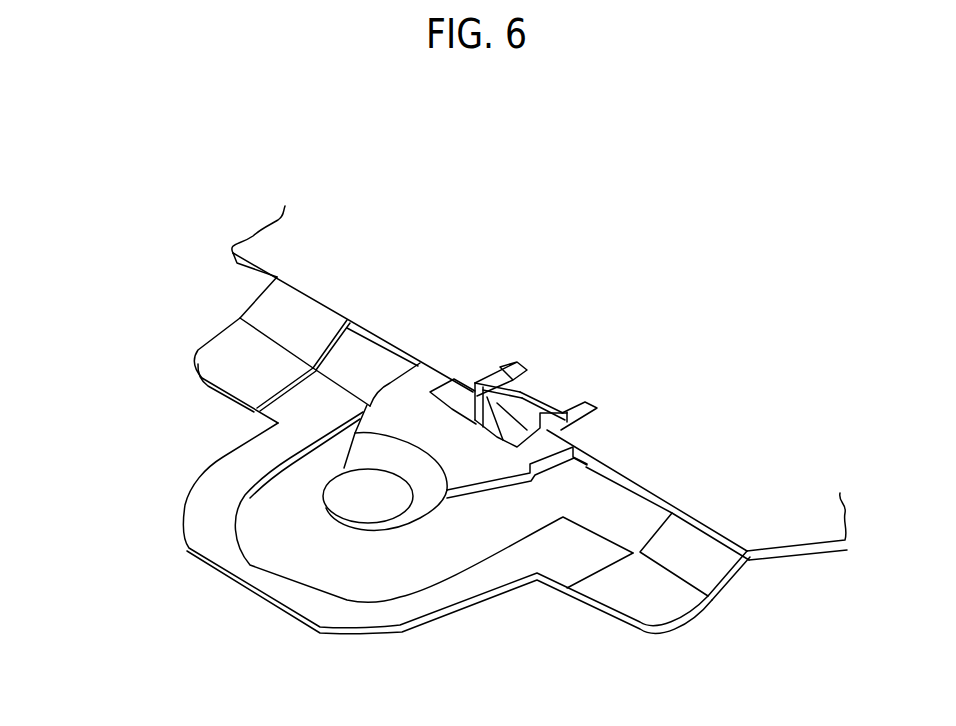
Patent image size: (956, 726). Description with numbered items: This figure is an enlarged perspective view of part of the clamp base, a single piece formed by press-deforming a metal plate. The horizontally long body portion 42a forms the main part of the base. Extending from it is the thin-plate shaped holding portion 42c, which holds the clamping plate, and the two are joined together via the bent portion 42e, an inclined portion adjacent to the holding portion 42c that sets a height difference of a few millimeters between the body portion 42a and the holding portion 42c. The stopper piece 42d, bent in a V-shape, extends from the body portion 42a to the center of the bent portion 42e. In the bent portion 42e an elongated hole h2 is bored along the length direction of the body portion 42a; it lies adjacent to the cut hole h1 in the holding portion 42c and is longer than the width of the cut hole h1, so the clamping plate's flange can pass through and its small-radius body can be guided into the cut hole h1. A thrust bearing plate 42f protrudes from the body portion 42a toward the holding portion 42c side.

The body portion 42a is at (283, 230).
The bent portion 42e is at (265, 310).
The elongated hole h2 is at (352, 360).
The stopper piece 42d is at (533, 397).
The cut hole h1 is at (268, 508).
The holding portion 42c is at (207, 533).
The thrust bearing plate 42f is at (380, 498).